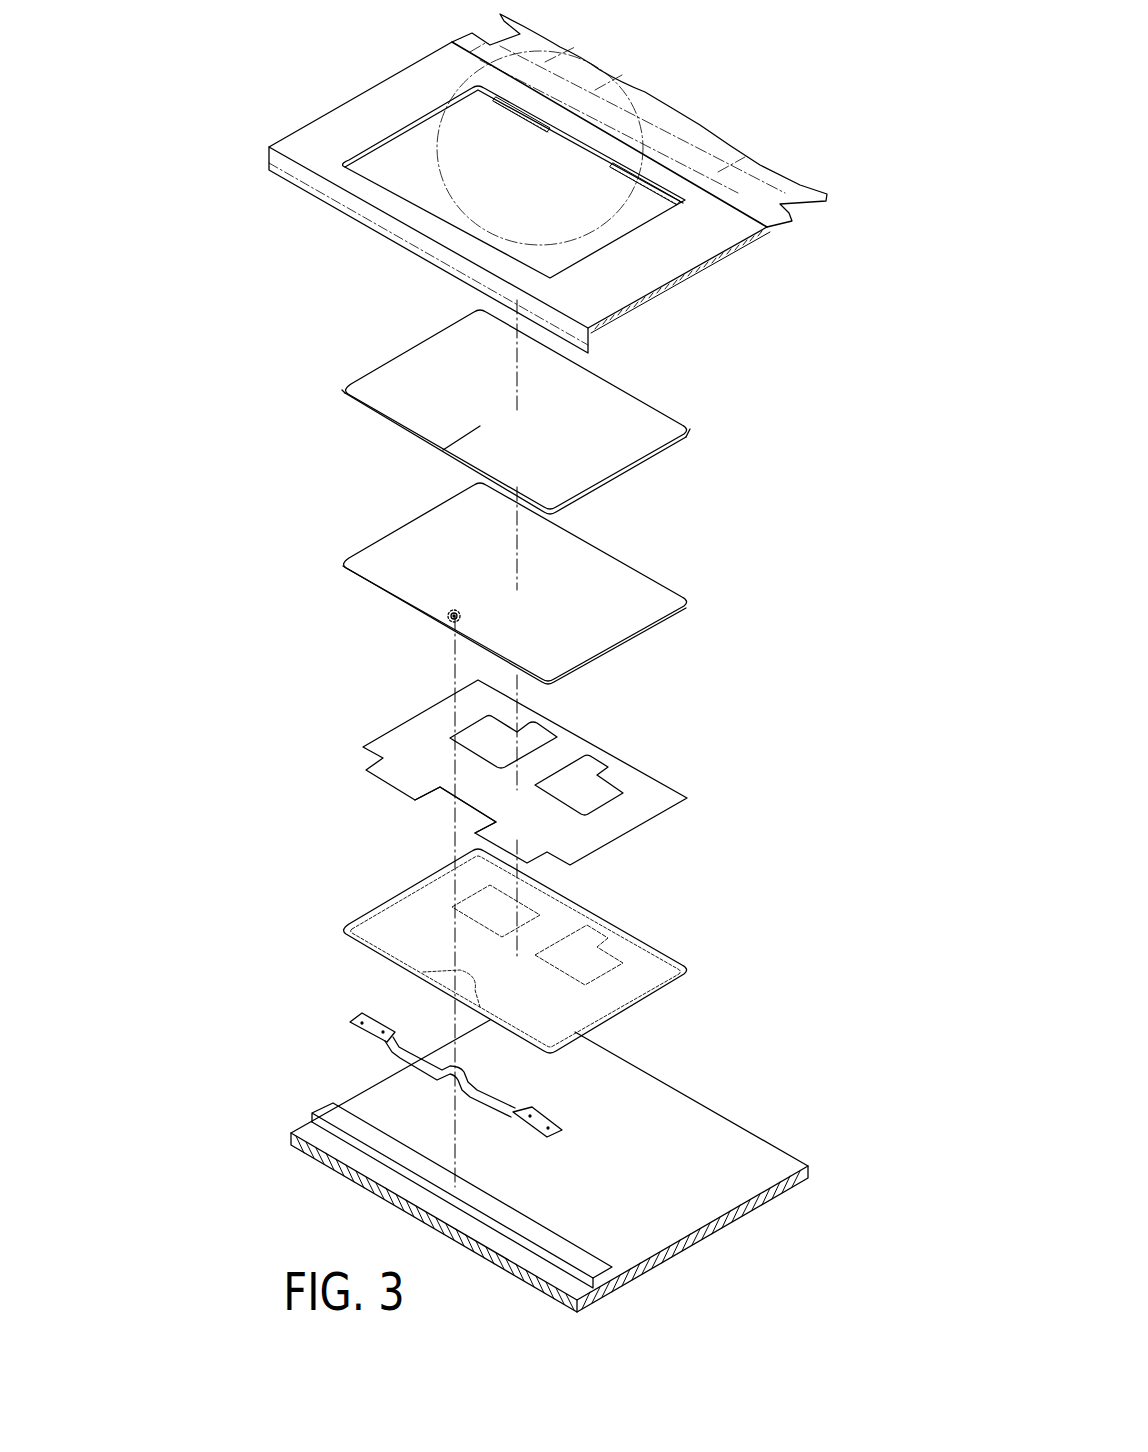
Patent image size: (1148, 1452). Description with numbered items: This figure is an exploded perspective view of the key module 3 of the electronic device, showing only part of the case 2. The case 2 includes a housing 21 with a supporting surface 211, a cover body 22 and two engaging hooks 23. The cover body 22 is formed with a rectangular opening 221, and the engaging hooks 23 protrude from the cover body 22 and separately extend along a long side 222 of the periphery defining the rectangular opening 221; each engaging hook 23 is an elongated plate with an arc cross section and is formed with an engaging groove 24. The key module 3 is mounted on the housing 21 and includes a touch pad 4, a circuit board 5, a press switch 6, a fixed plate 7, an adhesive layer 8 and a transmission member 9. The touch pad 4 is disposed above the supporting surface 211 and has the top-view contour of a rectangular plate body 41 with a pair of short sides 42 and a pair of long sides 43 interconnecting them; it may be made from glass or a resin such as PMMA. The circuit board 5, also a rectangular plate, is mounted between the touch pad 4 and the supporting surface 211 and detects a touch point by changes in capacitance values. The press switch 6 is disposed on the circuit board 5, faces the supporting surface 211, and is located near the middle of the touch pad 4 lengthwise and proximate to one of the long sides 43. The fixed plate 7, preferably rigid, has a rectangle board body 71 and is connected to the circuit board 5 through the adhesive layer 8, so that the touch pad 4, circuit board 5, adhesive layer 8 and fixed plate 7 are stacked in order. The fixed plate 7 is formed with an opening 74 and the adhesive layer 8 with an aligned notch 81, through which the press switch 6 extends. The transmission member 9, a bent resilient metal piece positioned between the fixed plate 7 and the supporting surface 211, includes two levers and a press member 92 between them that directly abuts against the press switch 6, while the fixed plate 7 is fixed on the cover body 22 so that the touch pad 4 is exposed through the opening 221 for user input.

The case 2 is at (378, 78).
The cover body 22 is at (663, 266).
The rectangular opening 221 is at (393, 158).
The long side 222 is at (597, 147).
The engaging hooks 23 is at (513, 113).
The engaging groove 24 is at (615, 170).
The key module 3 is at (283, 663).
The touch pad 4 is at (652, 465).
The rectangular plate body 41 is at (627, 410).
The short sides 42 is at (410, 345).
The long sides 43 is at (610, 380).
The circuit board 5 is at (618, 623).
The press switch 6 is at (447, 623).
The adhesive layer 8 is at (618, 817).
The notch 81 is at (440, 807).
The fixed plate 7 is at (707, 992).
The rectangle board body 71 is at (618, 988).
The opening 74 is at (440, 978).
The transmission member 9 is at (372, 1030).
The press member 92 is at (453, 1082).
The housing 21 is at (707, 1202).
The supporting surface 211 is at (593, 1268).